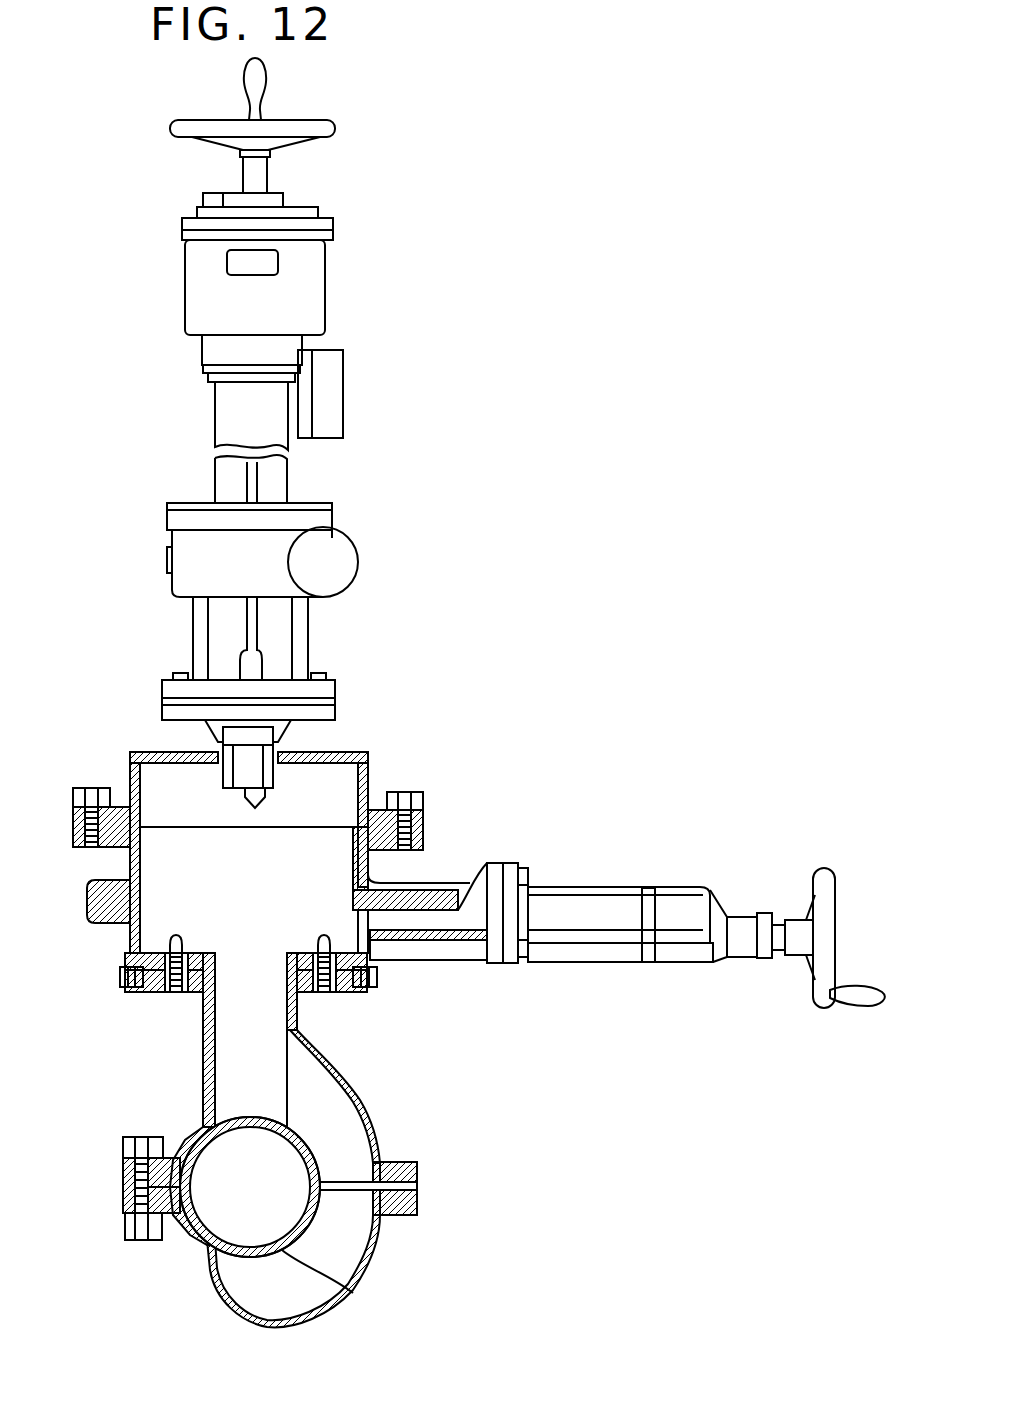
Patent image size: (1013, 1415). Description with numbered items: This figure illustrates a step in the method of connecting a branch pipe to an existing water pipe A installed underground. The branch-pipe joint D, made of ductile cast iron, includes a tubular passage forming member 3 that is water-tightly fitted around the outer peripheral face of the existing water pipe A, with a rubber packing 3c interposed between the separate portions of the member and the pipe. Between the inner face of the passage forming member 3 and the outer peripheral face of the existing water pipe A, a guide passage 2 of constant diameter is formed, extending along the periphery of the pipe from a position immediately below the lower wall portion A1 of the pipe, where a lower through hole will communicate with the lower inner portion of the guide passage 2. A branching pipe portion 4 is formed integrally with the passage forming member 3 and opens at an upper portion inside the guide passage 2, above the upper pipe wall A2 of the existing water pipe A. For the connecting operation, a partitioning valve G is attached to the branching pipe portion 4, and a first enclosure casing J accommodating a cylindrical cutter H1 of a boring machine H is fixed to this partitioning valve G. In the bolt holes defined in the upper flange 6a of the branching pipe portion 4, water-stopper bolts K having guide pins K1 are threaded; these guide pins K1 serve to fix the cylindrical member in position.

The boring machine H is at (358, 538).
The first enclosure casing J is at (140, 752).
The cylindrical cutter H1 is at (290, 778).
The partitioning valve G is at (443, 885).
The upper flange 6a is at (157, 955).
The guide pins K1 is at (320, 947).
The water-stopper bolts K is at (176, 992).
The upper pipe wall A2 is at (261, 1105).
The branching pipe portion 4 is at (203, 1087).
The passage forming member 3 is at (357, 1092).
The branch-pipe joint D is at (378, 1128).
The rubber packing 3c is at (407, 1163).
The guide passage 2 is at (323, 1260).
The existing water pipe A is at (340, 1288).
The lower wall portion A1 is at (250, 1257).